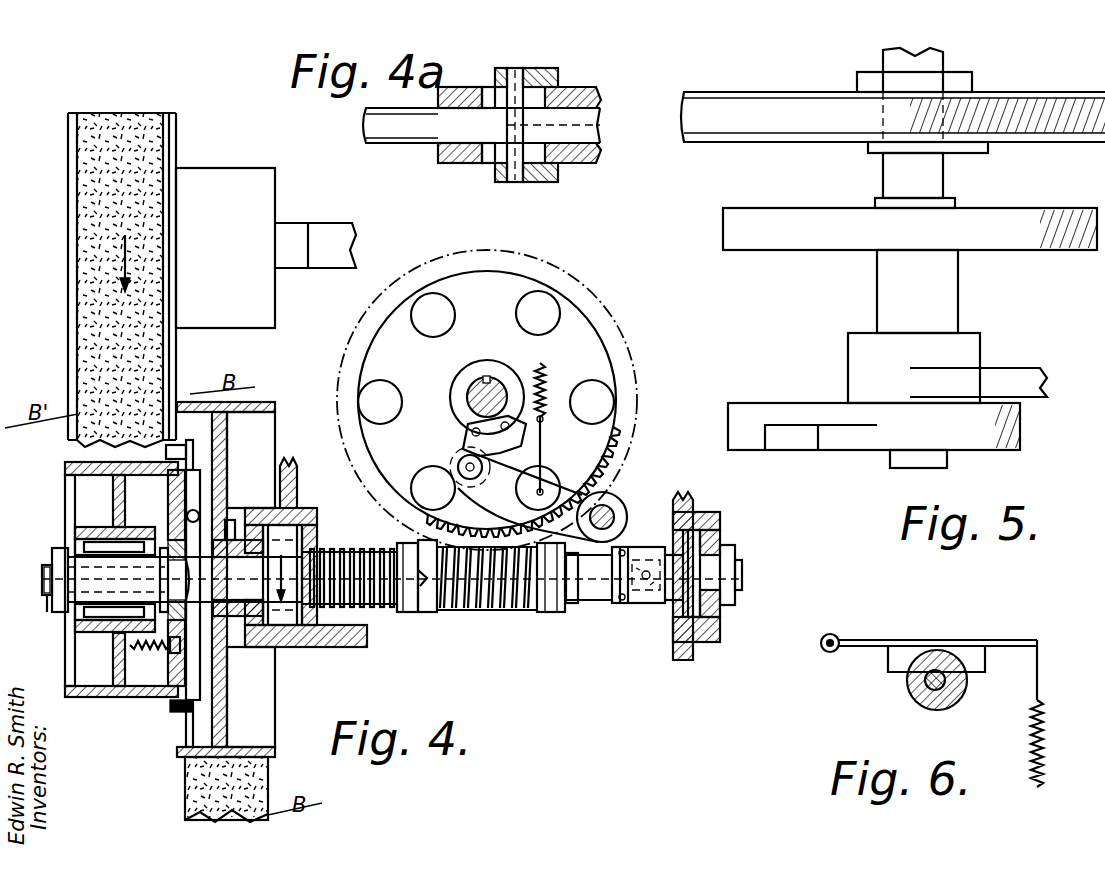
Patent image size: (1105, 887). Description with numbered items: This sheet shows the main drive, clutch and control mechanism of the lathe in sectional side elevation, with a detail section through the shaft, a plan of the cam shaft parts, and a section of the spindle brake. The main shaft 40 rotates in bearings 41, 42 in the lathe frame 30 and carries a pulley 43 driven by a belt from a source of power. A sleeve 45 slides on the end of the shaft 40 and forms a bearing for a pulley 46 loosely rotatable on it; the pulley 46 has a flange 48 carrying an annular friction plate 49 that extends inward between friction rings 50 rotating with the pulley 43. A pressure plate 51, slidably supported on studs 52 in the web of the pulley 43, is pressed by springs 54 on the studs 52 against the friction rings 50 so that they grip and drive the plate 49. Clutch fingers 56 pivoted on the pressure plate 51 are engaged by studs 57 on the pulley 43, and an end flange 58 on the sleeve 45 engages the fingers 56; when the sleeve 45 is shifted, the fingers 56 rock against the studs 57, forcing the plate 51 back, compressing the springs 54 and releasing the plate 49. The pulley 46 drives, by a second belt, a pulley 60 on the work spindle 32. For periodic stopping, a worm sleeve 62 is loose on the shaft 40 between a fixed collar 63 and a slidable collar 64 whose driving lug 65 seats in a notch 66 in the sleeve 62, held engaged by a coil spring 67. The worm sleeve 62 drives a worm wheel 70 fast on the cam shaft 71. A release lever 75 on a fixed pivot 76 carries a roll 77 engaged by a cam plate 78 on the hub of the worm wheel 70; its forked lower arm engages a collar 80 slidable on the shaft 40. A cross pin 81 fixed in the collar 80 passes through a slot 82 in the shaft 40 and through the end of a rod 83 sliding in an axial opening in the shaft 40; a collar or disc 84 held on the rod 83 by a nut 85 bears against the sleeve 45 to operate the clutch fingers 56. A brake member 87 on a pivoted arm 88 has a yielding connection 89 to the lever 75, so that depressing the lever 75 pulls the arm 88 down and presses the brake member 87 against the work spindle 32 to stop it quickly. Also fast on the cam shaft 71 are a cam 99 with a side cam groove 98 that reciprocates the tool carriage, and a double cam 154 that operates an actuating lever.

In FIG. 4, the lathe frame 30 is at (300, 472).
In FIG. 4, the work spindle 32 is at (320, 268).
In FIG. 6, the work spindle 32 is at (912, 698).
In FIG. 4, the main shaft 40 is at (582, 601).
In FIG. 4A, the main shaft 40 is at (600, 95).
In FIG. 4, the bearing 41 is at (300, 647).
In FIG. 4, the bearing 42 is at (708, 642).
In FIG. 4, the pulley 43 is at (275, 410).
In FIG. 4, the sleeve 45 is at (128, 540).
In FIG. 4, the pulley 46 is at (66, 468).
In FIG. 4, the flange 48 is at (168, 722).
In FIG. 4, the annular friction plate 49 is at (200, 466).
In FIG. 4, the friction rings 50 is at (200, 678).
In FIG. 4, the pressure plate 51 is at (170, 483).
In FIG. 4, the studs 52 is at (120, 650).
In FIG. 4, the springs 54 is at (155, 659).
In FIG. 4, the clutch fingers 56 is at (256, 575).
In FIG. 4, the studs 57 is at (229, 520).
In FIG. 4, the end flange 58 is at (391, 580).
In FIG. 4, the pulley 60 is at (68, 293).
In FIG. 4, the worm sleeve 62 is at (487, 611).
In FIG. 4, the collar 63 is at (552, 613).
In FIG. 4, the collar 64 is at (406, 612).
In FIG. 4, the driving lug 65 is at (420, 574).
In FIG. 4, the notch 66 is at (427, 612).
In FIG. 4, the coil spring 67 is at (343, 551).
In FIG. 4, the worm wheel 70 is at (620, 452).
In FIG. 5, the worm wheel 70 is at (1058, 92).
In FIG. 4, the cam shaft 71 is at (468, 397).
In FIG. 5, the cam shaft 71 is at (940, 60).
In FIG. 4, the release lever 75 is at (497, 497).
In FIG. 4, the fixed pivot 76 is at (612, 515).
In FIG. 4, the roll 77 is at (460, 464).
In FIG. 4, the cam plate 78 is at (507, 440).
In FIG. 5, the cam plate 78 is at (978, 153).
In FIG. 4, the collar 80 is at (655, 603).
In FIG. 4A, the collar 80 is at (538, 68).
In FIG. 4, the cross pin 81 is at (628, 564).
In FIG. 4A, the cross pin 81 is at (514, 182).
In FIG. 4A, the slot 82 is at (487, 160).
In FIG. 4A, the rod 83 is at (420, 140).
In FIG. 4, the collar or disc 84 is at (56, 562).
In FIG. 4, the nut 85 is at (47, 598).
In FIG. 6, the brake member 87 is at (984, 662).
In FIG. 6, the pivoted arm 88 is at (1022, 642).
In FIG. 4, the yielding connection 89 is at (541, 438).
In FIG. 6, the yielding connection 89 is at (1031, 740).
In FIG. 5, the cam groove 98 is at (782, 452).
In FIG. 5, the cam 99 is at (1020, 430).
In FIG. 5, the double cam 154 is at (1050, 281).